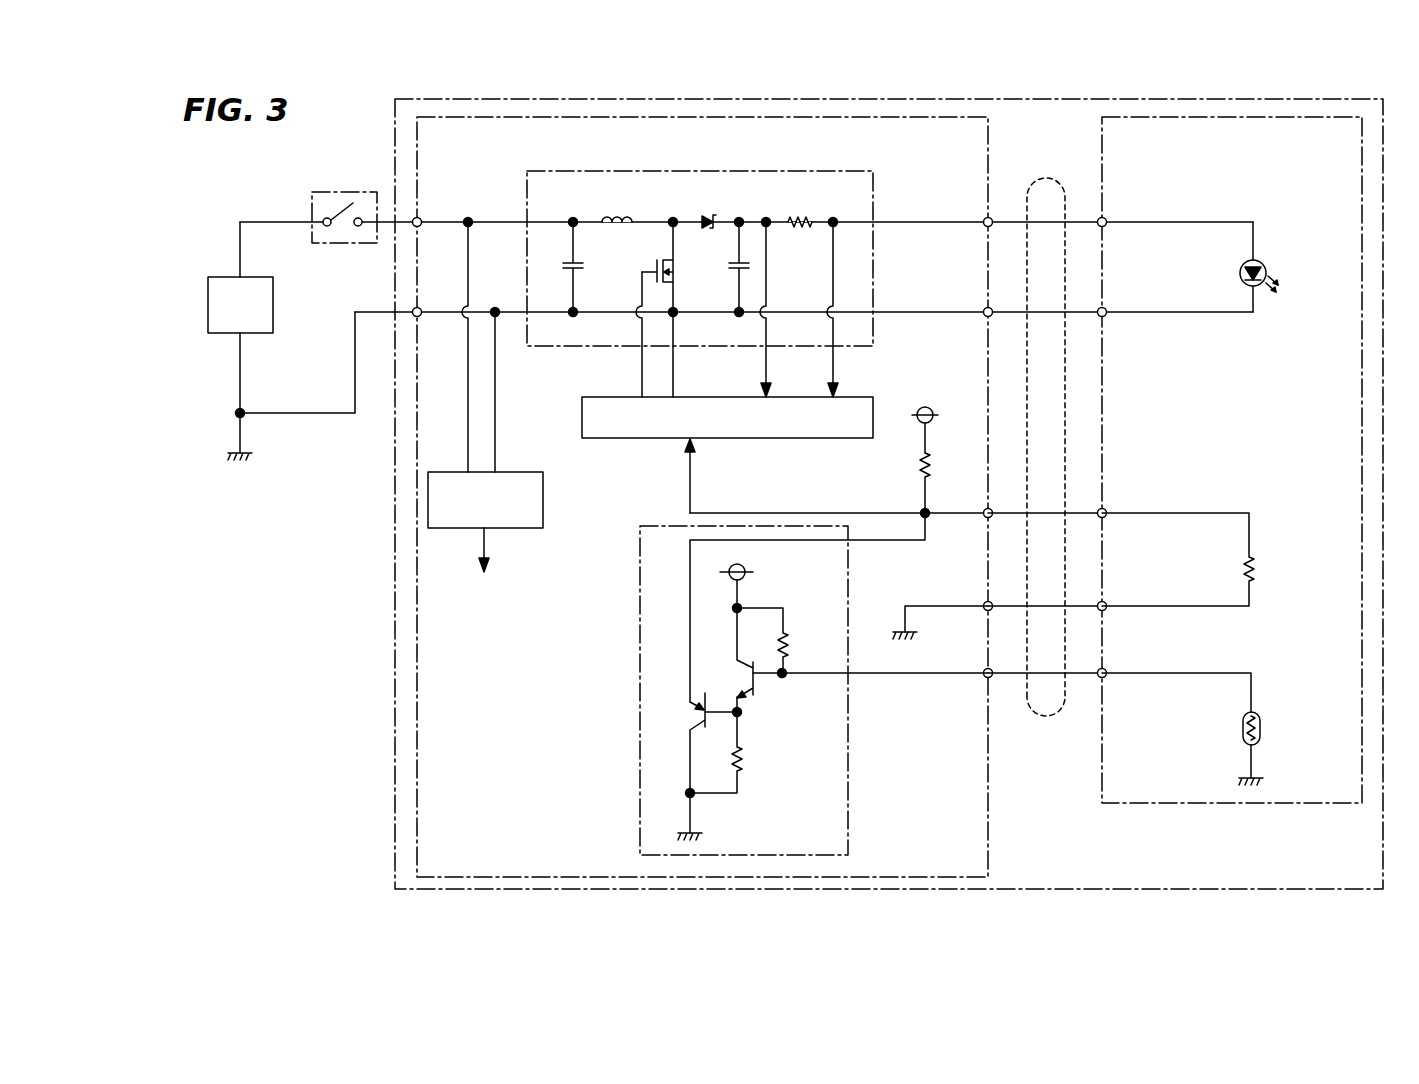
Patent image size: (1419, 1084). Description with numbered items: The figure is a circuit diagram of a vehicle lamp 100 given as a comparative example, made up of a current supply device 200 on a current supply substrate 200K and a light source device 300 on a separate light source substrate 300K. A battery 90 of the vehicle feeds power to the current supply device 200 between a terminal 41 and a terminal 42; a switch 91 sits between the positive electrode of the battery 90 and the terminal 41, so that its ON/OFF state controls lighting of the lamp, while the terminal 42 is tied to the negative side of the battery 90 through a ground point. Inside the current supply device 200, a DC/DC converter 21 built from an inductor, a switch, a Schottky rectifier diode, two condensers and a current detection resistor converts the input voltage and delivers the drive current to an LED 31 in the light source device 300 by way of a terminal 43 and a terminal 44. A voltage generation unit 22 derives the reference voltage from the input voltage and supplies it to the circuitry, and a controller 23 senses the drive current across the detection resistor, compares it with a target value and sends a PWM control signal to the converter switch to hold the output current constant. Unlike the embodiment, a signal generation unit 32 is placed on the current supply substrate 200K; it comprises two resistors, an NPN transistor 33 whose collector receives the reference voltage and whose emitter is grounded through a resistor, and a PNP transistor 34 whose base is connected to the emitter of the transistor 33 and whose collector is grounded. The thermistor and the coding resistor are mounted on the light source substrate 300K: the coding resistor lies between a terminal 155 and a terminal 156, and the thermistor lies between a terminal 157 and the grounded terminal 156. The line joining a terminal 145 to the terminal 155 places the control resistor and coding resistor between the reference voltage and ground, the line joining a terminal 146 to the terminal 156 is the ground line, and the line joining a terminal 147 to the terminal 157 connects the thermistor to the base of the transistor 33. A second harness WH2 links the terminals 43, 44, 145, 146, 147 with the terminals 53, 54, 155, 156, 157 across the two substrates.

The vehicle lamp 100 is at (395, 138).
The current supply device 200 is at (989, 837).
The current supply substrate 200K is at (989, 800).
The light source device 300 is at (1175, 805).
The light source substrate 300K is at (1258, 805).
The DC/DC converter 21 is at (862, 170).
The voltage generation unit 22 is at (543, 497).
The controller 23 is at (797, 439).
The LED 31 is at (1264, 262).
The signal generation unit 32 is at (640, 710).
The transistor 33 is at (754, 690).
The transistor 34 is at (703, 700).
The terminal 41 is at (420, 218).
The terminal 42 is at (420, 316).
The terminal 43 is at (986, 220).
The terminal 44 is at (986, 310).
The terminal 53 is at (1104, 220).
The terminal 54 is at (1104, 310).
The battery 90 is at (225, 277).
The switch 91 is at (317, 192).
The terminal 145 is at (986, 517).
The terminal 146 is at (986, 610).
The terminal 147 is at (986, 677).
The terminal 155 is at (1104, 510).
The terminal 156 is at (1104, 603).
The terminal 157 is at (1104, 677).
The second harness WH2 is at (1047, 712).